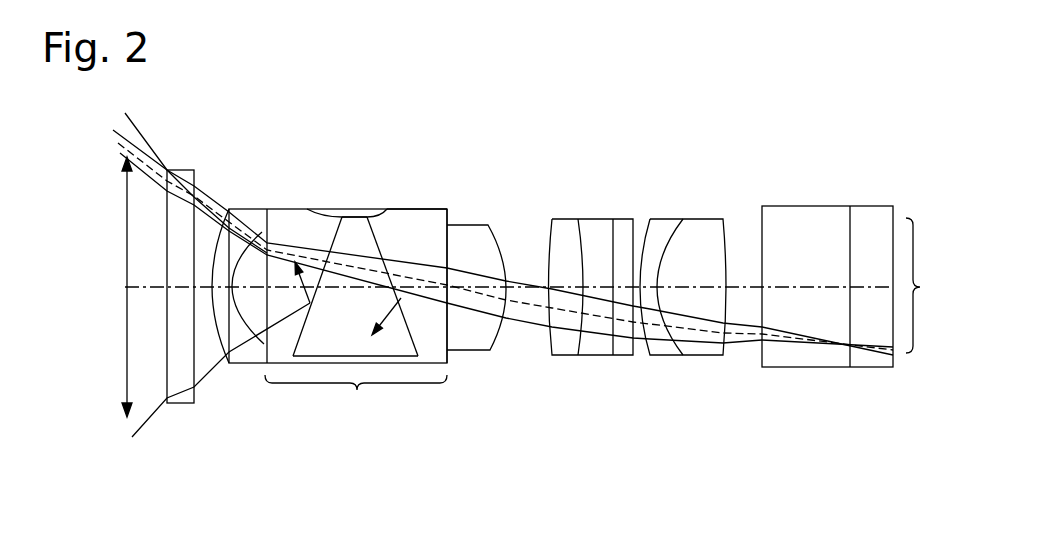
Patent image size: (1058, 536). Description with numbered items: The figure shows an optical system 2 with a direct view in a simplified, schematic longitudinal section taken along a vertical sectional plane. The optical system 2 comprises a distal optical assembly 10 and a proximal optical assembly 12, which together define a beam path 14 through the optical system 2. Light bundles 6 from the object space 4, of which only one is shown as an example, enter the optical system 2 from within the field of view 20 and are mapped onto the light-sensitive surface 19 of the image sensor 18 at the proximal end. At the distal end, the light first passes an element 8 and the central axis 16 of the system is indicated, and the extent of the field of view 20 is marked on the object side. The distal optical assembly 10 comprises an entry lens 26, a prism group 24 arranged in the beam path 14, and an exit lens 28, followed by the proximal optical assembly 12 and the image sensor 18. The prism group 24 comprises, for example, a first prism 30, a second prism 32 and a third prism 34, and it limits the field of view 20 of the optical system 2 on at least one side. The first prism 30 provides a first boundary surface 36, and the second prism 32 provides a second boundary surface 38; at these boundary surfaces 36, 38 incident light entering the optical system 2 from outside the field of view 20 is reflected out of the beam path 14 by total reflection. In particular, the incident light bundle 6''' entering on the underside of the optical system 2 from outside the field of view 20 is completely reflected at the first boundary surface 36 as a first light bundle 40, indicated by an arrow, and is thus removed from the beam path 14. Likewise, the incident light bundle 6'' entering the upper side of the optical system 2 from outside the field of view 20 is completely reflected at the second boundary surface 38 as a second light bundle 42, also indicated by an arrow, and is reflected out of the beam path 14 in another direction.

The optical system 2 is at (712, 122).
The object space 4 is at (98, 276).
The light bundle 6 is at (476, 242).
The incident light bundle 6'' is at (196, 162).
The incident light bundle 6''' is at (221, 413).
The entrance window 8 is at (186, 169).
The distal optical assembly 10 is at (378, 157).
The proximal optical assembly 12 is at (598, 195).
The beam path 14 is at (420, 260).
The optical axis 16 is at (147, 287).
The image sensor 18 is at (895, 210).
The light-sensitive surface 19 is at (933, 285).
The field of view 20 is at (125, 220).
The prism group 24 is at (356, 390).
The entry lens 26 is at (242, 207).
The exit lens 28 is at (482, 238).
The first prism 30 is at (303, 207).
The second prism 32 is at (362, 207).
The third prism 34 is at (418, 209).
The first boundary surface 36 is at (297, 345).
The second boundary surface 38 is at (412, 345).
The first light bundle 40 is at (295, 262).
The second light bundle 42 is at (383, 338).